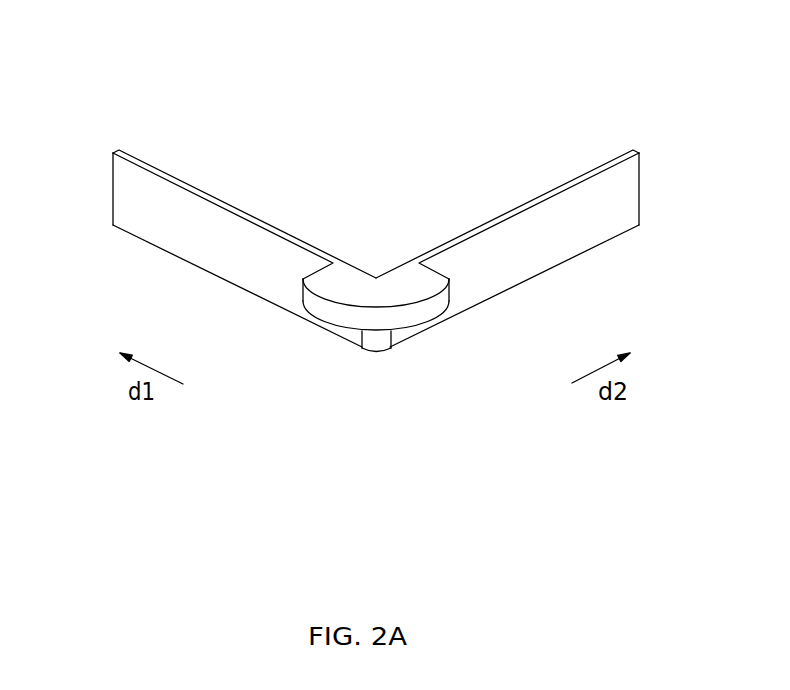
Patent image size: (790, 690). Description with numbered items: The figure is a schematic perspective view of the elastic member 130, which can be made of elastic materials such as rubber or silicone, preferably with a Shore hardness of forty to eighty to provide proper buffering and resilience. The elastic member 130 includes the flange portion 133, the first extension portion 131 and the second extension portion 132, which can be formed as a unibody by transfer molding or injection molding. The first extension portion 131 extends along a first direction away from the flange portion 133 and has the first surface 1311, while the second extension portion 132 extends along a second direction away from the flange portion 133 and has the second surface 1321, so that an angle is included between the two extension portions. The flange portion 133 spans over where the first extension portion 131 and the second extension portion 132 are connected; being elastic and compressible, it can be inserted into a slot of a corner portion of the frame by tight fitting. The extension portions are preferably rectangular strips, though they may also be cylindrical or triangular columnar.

The elastic member 130 is at (126, 37).
The first extension portion 131 is at (118, 151).
The second extension portion 132 is at (634, 151).
The first surface 1311 is at (212, 244).
The second surface 1321 is at (543, 240).
The flange portion 133 is at (339, 293).